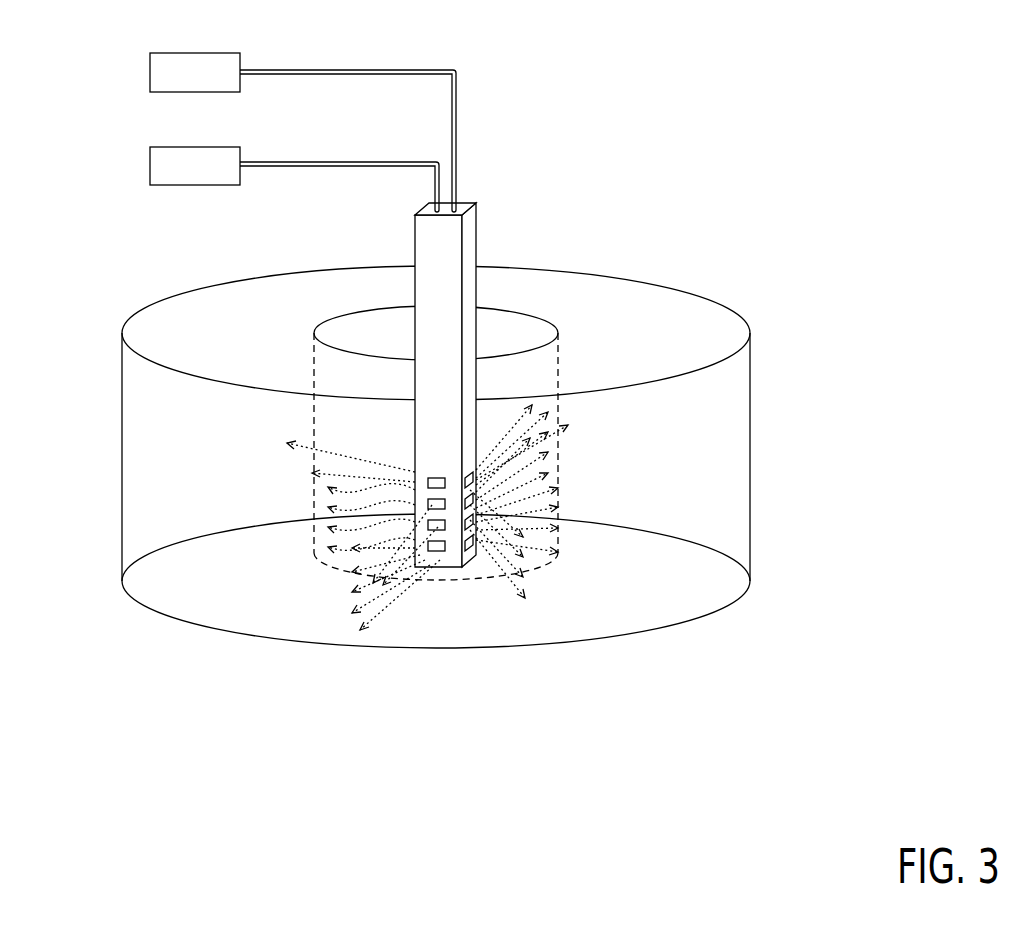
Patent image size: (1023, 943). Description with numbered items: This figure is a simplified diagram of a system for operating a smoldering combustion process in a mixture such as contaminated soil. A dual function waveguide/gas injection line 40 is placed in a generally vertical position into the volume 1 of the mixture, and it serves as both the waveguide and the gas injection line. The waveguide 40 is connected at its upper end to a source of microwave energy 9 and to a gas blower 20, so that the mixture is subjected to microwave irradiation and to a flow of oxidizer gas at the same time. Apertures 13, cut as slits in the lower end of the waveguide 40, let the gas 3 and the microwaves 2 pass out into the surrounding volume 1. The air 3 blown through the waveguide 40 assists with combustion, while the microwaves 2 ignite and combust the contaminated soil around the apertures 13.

The volume 1 is at (716, 322).
The microwaves 2 is at (553, 517).
The gas 3 is at (303, 448).
The source of microwave energy 9 is at (188, 178).
The apertures 13 is at (445, 504).
The gas blower 20 is at (181, 84).
The dual function waveguide/gas injection line 40 is at (465, 205).